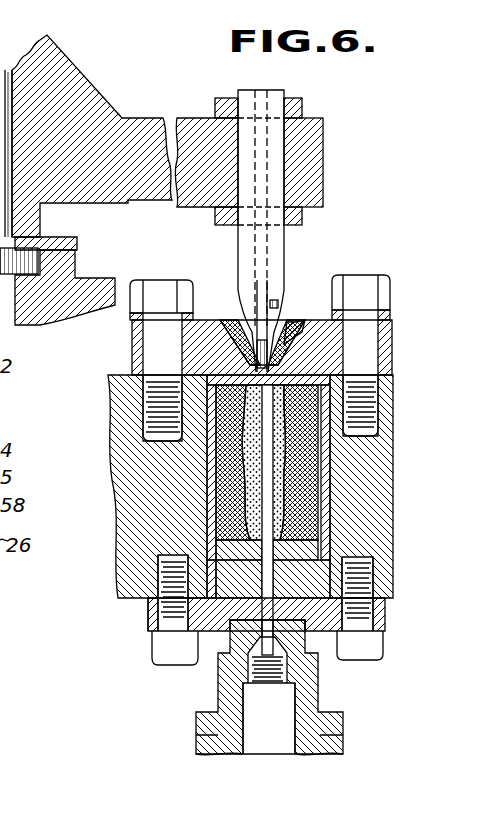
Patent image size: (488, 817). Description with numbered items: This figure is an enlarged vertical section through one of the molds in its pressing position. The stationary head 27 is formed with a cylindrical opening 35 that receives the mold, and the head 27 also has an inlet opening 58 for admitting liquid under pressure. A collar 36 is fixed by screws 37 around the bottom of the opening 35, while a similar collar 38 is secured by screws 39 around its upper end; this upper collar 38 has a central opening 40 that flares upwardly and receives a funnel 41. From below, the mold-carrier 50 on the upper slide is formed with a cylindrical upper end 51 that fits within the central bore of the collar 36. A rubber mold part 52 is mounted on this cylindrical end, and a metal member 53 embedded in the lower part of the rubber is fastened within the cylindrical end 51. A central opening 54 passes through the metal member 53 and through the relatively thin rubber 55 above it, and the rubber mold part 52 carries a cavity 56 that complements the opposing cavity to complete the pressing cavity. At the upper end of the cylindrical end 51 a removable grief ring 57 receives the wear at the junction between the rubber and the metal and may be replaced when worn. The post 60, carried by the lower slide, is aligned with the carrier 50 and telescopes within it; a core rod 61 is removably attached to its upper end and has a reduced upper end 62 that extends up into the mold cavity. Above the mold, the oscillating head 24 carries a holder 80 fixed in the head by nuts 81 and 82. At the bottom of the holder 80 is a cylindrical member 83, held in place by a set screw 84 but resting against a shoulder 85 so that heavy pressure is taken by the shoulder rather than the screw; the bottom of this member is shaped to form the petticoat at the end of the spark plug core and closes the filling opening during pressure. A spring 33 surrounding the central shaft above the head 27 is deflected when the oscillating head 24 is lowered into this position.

The oscillating head 24 is at (300, 148).
The nut 82 is at (302, 107).
The nut 81 is at (303, 215).
The holder 80 is at (282, 254).
The shoulder 85 is at (247, 295).
The set screw 84 is at (288, 312).
The cylindrical member 83 is at (252, 340).
The spring 33 is at (55, 245).
The screw 39 is at (155, 292).
The collar 38 is at (388, 347).
The central opening 40 is at (290, 343).
The funnel 41 is at (292, 332).
The reduced upper end 62 is at (345, 378).
The stationary head 27 is at (110, 588).
The cylindrical opening 35 is at (212, 462).
The inlet opening 58 is at (207, 514).
The rubber mold part 52 is at (208, 536).
The central opening 54 is at (318, 552).
The core rod 61 is at (322, 446).
The cavity 56 is at (325, 484).
The thin rubber 55 is at (325, 528).
The collar 36 is at (205, 662).
The cylindrical upper end 51 is at (200, 613).
The grief ring 57 is at (150, 612).
The screw 37 is at (166, 658).
The metal member 53 is at (300, 600).
The mold-carrier 50 is at (212, 727).
The post 60 is at (270, 748).